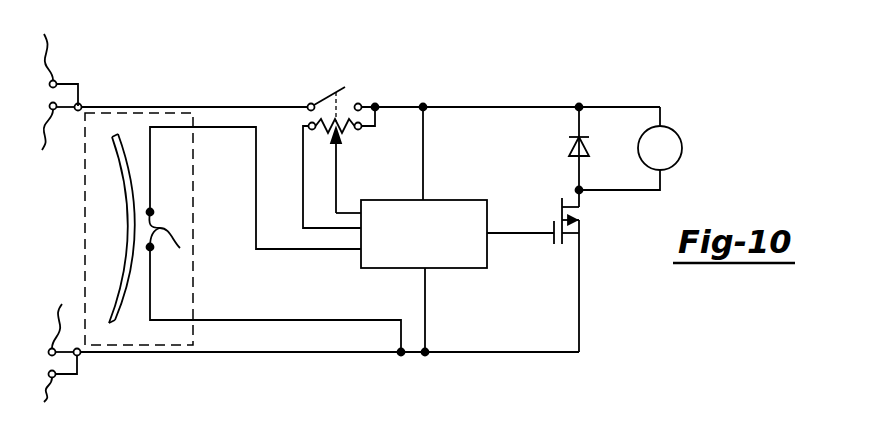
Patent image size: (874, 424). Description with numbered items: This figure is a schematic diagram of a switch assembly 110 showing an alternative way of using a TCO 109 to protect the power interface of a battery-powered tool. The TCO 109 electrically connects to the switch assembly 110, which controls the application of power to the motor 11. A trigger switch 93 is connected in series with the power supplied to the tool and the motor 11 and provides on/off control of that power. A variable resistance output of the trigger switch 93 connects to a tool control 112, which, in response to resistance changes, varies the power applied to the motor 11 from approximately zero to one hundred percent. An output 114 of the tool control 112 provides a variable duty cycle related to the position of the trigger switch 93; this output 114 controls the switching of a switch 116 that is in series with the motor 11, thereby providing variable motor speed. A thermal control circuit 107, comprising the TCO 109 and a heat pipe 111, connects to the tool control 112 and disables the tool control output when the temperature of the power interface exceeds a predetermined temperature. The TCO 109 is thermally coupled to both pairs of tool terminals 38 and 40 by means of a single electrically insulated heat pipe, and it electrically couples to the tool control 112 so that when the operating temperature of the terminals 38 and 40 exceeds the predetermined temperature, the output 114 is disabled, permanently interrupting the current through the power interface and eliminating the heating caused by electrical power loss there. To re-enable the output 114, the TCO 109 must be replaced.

The motor 11 is at (682, 148).
The tool terminals 38 is at (56, 229).
The tool terminals 40 is at (54, 213).
The trigger switch 93 is at (323, 95).
The thermal control circuit 107 is at (120, 115).
The TCO 109 is at (180, 248).
The switch assembly 110 is at (378, 78).
The heat pipe 111 is at (116, 318).
The tool control 112 is at (487, 218).
The output 114 is at (497, 242).
The switch 116 is at (581, 220).